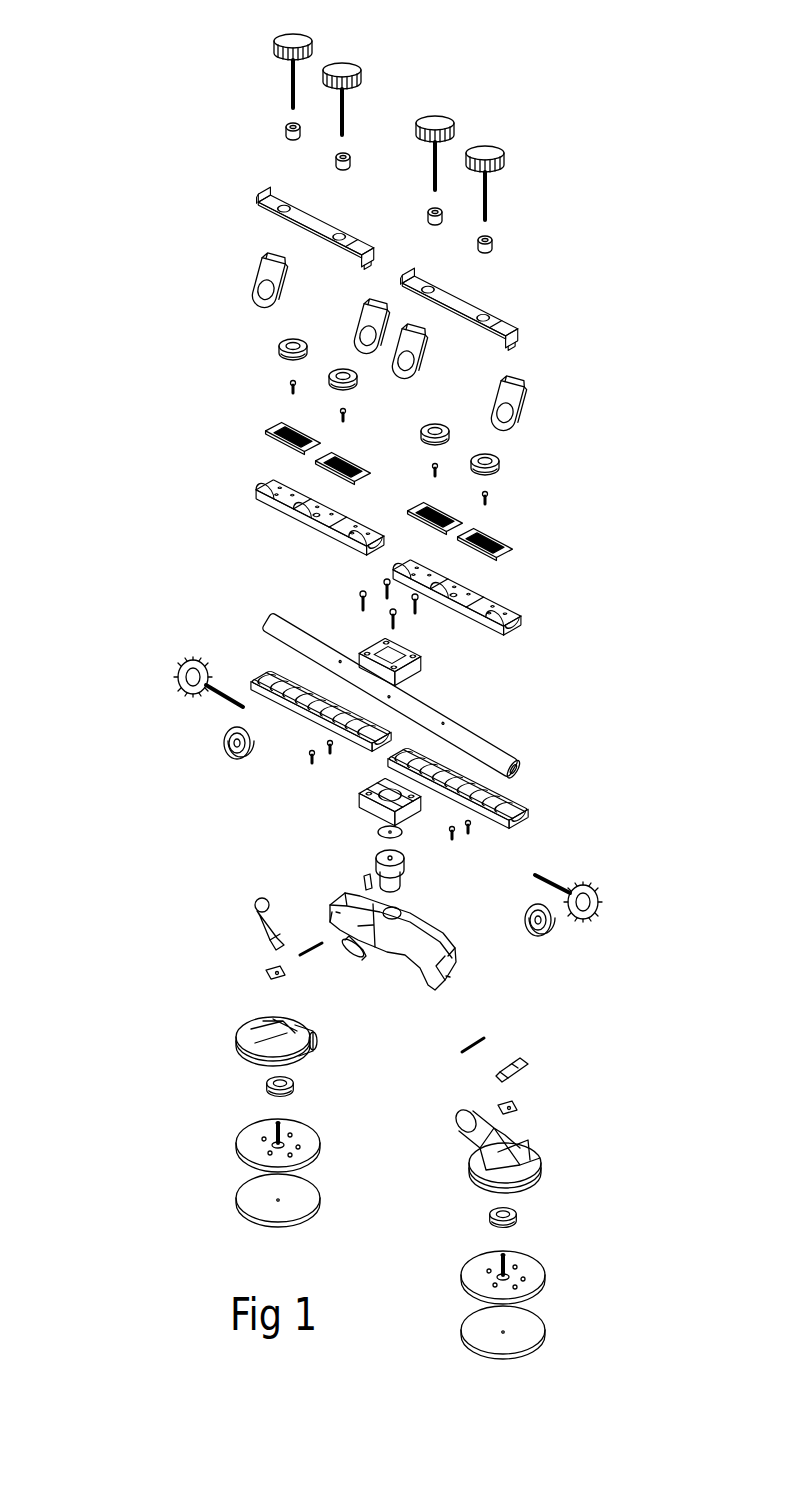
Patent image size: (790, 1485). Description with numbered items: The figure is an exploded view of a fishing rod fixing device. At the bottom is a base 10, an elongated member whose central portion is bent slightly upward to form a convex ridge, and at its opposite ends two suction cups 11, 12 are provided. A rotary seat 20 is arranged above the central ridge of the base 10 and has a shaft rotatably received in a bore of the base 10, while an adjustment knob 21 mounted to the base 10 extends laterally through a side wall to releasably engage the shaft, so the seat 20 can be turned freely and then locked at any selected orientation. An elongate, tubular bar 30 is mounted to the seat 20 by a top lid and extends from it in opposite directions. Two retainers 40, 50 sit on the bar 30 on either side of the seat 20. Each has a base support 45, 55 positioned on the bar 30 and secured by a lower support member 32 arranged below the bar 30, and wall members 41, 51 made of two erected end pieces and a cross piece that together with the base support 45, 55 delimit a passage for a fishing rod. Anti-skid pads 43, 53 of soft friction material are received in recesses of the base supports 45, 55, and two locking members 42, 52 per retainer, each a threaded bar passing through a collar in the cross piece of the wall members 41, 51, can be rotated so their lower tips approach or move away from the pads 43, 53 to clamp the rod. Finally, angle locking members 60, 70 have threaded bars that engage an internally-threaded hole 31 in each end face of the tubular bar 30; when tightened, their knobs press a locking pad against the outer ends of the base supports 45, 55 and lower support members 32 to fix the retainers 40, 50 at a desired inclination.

The base 10 is at (407, 957).
The suction cup 11 is at (205, 920).
The suction cup 12 is at (590, 1063).
The rotary seat 20 is at (340, 785).
The adjustment knob 21 is at (347, 960).
The elongate bar 30 is at (490, 748).
The internally-threaded hole 31 is at (520, 772).
The lower support member 32 is at (520, 815).
The retainer 40 is at (168, 205).
The wall members 41 is at (240, 183).
The locking member 42 is at (360, 74).
The anti-skid pad 43 is at (287, 427).
The base support 45 is at (263, 482).
The retainer 50 is at (620, 332).
The wall members 51 is at (532, 315).
The locking member 52 is at (500, 164).
The anti-skid pad 53 is at (487, 537).
The base support 55 is at (520, 622).
The angle locking member 60 is at (180, 668).
The angle locking member 70 is at (600, 893).